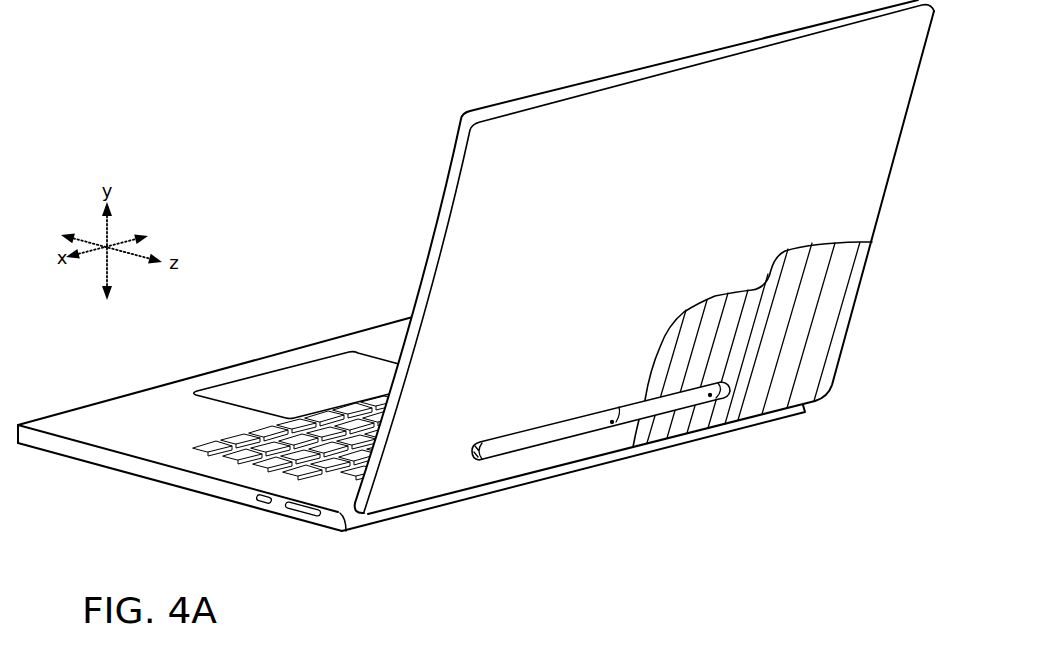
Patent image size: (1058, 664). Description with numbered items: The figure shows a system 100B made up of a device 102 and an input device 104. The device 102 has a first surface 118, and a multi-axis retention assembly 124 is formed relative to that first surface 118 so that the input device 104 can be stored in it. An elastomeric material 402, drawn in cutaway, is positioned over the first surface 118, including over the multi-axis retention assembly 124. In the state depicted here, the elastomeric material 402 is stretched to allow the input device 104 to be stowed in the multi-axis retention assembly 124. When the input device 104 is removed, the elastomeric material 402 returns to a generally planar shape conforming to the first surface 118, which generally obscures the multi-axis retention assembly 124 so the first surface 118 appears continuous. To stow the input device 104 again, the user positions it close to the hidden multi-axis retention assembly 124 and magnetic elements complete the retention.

The system 100B is at (423, 32).
The device 102 is at (383, 168).
The first surface 118 is at (740, 194).
The elastomeric material 402 is at (683, 313).
The input device 104 is at (579, 442).
The multi-axis retention assembly 124 is at (475, 476).